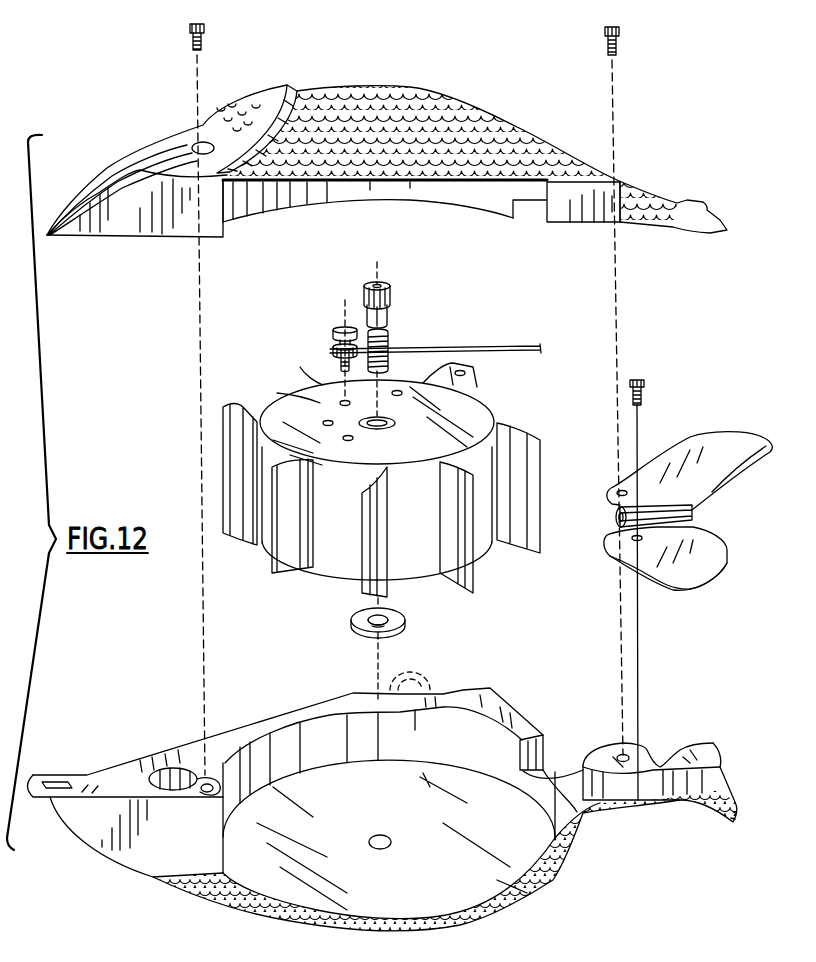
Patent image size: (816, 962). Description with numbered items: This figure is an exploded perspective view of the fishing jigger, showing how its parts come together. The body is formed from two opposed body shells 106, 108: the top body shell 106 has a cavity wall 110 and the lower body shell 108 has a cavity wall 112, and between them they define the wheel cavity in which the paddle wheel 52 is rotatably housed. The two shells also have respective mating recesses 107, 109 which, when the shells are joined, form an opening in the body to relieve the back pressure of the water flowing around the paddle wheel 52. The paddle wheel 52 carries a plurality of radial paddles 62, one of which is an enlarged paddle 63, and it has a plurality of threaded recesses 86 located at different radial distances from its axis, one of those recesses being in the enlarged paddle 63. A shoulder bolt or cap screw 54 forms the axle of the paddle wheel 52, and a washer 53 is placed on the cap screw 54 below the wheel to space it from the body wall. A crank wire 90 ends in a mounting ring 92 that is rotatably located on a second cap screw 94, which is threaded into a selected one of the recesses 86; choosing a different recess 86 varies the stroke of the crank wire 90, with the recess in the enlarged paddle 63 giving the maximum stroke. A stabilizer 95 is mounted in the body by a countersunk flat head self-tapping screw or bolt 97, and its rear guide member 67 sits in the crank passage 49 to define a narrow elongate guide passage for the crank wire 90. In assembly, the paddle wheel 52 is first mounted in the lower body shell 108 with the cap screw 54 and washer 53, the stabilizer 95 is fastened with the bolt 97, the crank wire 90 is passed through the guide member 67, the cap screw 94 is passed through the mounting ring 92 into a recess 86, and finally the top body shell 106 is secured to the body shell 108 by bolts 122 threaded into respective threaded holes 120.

The bolts 122 is at (204, 32).
The body shell 106 is at (452, 92).
The cavity wall 110 is at (297, 190).
The mating recess 107 is at (543, 212).
The cap screw 54 is at (391, 302).
The crank wire 90 is at (458, 350).
The cap screw 94 is at (344, 326).
The mounting ring 92 is at (333, 351).
The paddle wheel 52 is at (482, 540).
The radial paddles 62 is at (252, 527).
The enlarged paddle 63 is at (481, 381).
The threaded recesses 86 is at (340, 403).
The washer 53 is at (400, 620).
The bolt 97 is at (646, 392).
The rear guide member 67 is at (689, 481).
The stabilizer 95 is at (697, 572).
The body shell 108 is at (495, 915).
The mating recess 109 is at (560, 760).
The crank passage 49 is at (672, 770).
The threaded holes 120 is at (207, 793).
The cavity wall 112 is at (312, 897).